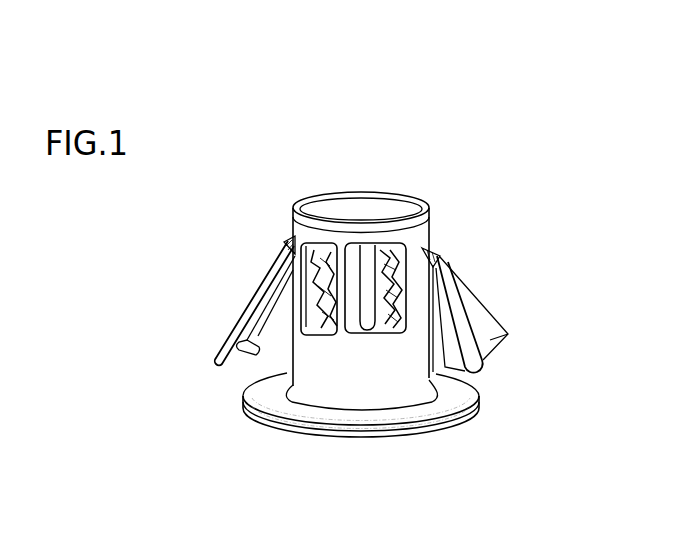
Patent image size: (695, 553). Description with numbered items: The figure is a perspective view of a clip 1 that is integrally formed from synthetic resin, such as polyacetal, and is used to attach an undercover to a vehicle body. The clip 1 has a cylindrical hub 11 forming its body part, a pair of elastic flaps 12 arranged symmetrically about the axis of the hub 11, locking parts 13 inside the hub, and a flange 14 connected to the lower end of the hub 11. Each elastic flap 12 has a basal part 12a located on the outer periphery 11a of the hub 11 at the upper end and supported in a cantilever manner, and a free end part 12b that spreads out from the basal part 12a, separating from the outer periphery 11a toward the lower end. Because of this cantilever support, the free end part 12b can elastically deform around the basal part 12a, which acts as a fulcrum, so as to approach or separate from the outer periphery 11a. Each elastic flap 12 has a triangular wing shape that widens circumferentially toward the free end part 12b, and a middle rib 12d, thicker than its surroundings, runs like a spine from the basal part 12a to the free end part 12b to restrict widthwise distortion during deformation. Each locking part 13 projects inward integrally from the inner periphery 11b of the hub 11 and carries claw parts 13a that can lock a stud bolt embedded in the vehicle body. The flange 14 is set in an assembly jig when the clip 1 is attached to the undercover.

The clip 1 is at (530, 124).
The hub 11 is at (398, 189).
The outer periphery 11a is at (407, 355).
The inner periphery 11b is at (322, 340).
The elastic flap 12 is at (240, 297).
The basal part 12a is at (283, 250).
The free end part 12b is at (236, 342).
The middle rib 12d is at (245, 322).
The locking part 13 is at (376, 320).
The claw part 13a is at (375, 246).
The flange 14 is at (432, 434).